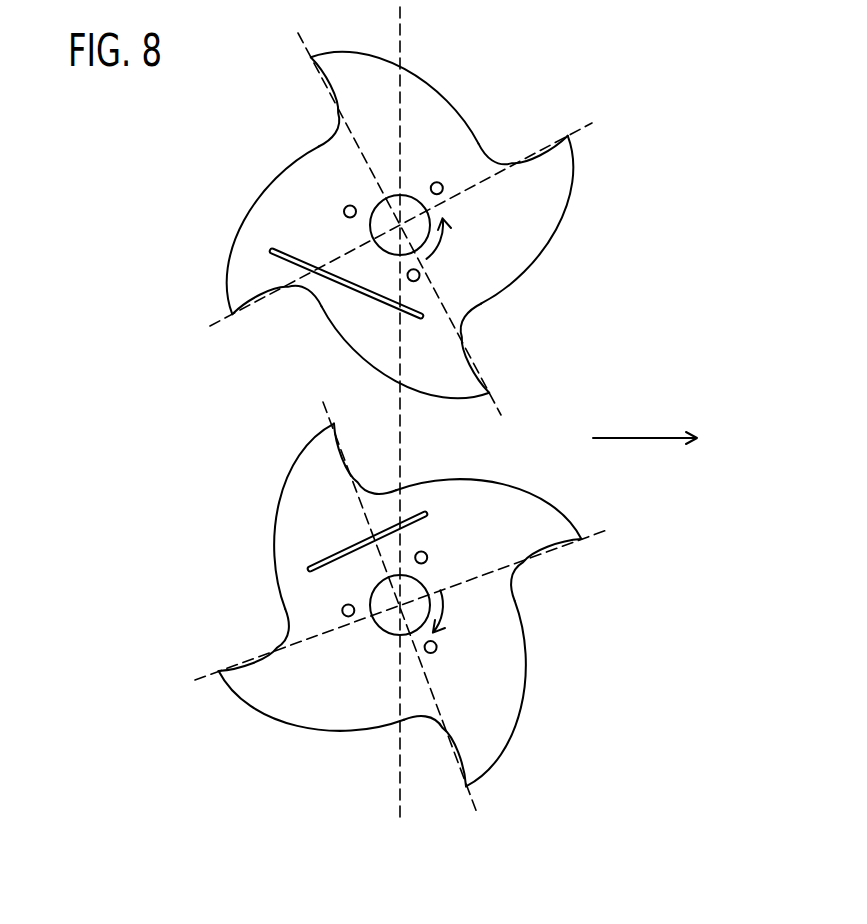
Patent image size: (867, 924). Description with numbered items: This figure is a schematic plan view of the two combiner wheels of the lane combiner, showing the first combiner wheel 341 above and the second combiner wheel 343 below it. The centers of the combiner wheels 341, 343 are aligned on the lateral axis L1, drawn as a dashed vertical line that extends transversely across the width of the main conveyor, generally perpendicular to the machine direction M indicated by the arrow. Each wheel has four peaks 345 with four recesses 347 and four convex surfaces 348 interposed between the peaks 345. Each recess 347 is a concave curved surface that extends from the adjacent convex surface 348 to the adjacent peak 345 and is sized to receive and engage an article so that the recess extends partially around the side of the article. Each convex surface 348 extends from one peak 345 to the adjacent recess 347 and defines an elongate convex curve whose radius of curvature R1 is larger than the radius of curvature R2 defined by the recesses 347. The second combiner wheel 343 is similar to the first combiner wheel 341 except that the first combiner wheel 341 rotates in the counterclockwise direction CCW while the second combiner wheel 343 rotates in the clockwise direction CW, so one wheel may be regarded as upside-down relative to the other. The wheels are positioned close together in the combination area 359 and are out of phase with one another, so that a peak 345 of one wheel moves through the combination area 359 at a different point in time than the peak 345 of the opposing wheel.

The first combiner wheel 341 is at (647, 145).
The second combiner wheel 343 is at (620, 656).
The peaks 345 is at (311, 60).
The recesses 347 is at (339, 113).
The convex surfaces 348 is at (253, 207).
The combination area 359 is at (298, 402).
The lateral axis L1 is at (403, 30).
The radius of curvature R1 is at (368, 53).
The radius of curvature R2 is at (478, 148).
The counterclockwise direction CCW is at (445, 240).
The clockwise direction CW is at (445, 607).
The machine direction M is at (643, 436).